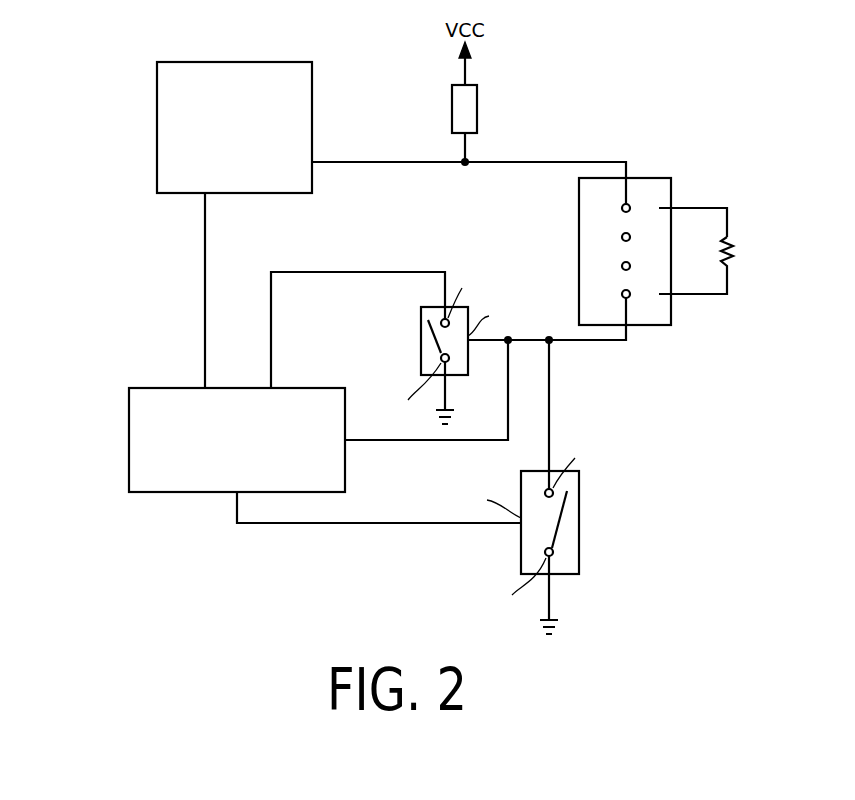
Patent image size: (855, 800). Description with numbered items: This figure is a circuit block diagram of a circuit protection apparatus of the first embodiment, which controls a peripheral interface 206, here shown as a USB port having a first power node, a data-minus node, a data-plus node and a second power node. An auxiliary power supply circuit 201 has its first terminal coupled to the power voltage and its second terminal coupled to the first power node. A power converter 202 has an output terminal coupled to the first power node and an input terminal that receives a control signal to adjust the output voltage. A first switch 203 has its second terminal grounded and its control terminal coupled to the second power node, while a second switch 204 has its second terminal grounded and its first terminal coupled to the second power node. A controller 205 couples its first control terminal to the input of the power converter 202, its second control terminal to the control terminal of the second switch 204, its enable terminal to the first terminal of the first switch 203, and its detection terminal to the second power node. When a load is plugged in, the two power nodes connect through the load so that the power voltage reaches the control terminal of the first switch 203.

The auxiliary power supply circuit 201 is at (477, 108).
The power converter 202 is at (157, 130).
The first switch 203 is at (421, 340).
The second switch 204 is at (579, 522).
The controller 205 is at (129, 440).
The peripheral interface 206 is at (650, 178).